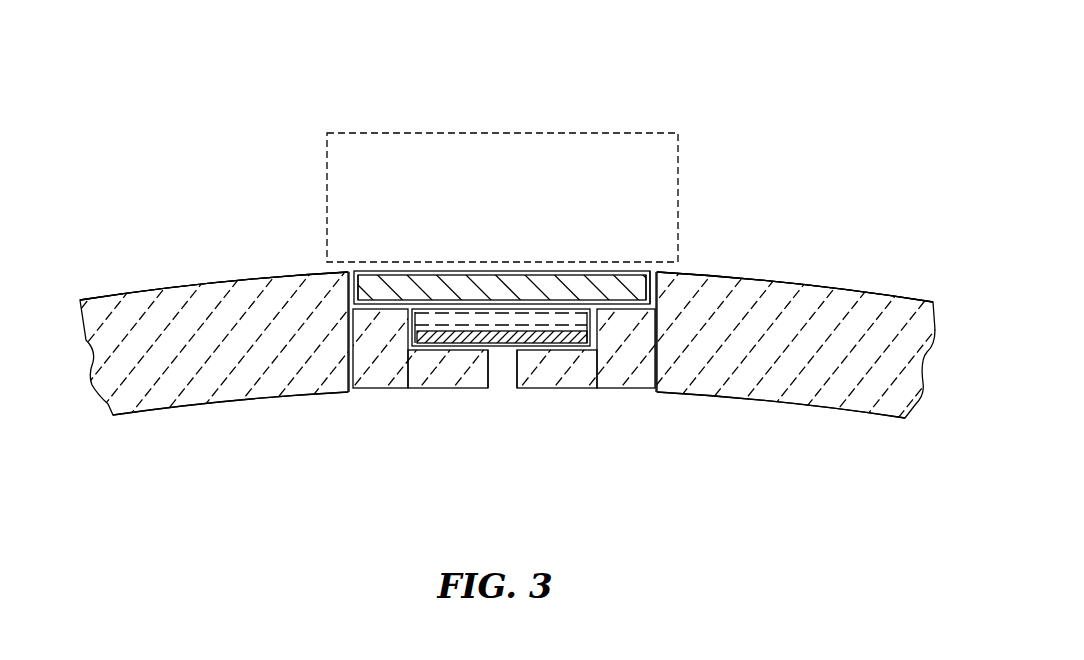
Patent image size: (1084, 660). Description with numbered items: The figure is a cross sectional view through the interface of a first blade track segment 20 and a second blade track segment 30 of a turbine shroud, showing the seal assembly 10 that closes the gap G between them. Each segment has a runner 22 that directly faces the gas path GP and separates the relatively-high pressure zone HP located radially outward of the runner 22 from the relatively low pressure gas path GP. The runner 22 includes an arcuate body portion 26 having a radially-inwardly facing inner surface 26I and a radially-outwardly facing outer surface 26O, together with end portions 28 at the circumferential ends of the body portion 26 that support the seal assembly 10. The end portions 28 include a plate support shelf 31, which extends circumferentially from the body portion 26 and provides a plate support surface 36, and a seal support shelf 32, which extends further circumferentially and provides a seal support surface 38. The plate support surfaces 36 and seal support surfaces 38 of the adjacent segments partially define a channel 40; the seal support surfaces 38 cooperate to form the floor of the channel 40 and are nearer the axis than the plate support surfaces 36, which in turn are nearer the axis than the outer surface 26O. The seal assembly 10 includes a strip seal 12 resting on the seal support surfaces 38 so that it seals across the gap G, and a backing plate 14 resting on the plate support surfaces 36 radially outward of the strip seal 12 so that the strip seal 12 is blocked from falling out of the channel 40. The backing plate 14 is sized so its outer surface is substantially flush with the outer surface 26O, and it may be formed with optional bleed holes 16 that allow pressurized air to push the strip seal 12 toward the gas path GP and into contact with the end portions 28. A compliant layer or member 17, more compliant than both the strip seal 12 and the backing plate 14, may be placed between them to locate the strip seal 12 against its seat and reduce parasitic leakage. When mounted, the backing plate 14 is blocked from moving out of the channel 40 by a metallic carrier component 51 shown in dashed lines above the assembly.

The seal assembly 10 is at (577, 145).
The strip seal 12 is at (540, 318).
The backing plate 14 is at (467, 270).
The bleed holes 16 is at (487, 300).
The compliant layer or member 17 is at (502, 310).
The first blade track segment 20 is at (93, 285).
The runner 22 is at (140, 278).
The body portion 26 is at (198, 393).
The outer surface 26O is at (270, 276).
The inner surface 26I is at (277, 398).
The end portions 28 is at (383, 401).
The second blade track segment 30 is at (910, 287).
The plate support shelf 31 is at (365, 388).
The seal support shelf 32 is at (440, 388).
The plate support surface 36 is at (392, 302).
The seal support surface 38 is at (462, 347).
The channel 40 is at (641, 267).
The metallic carrier component 51 is at (327, 155).
The gap G is at (500, 387).
The relatively-high pressure zone HP is at (794, 108).
The gas path GP is at (577, 520).